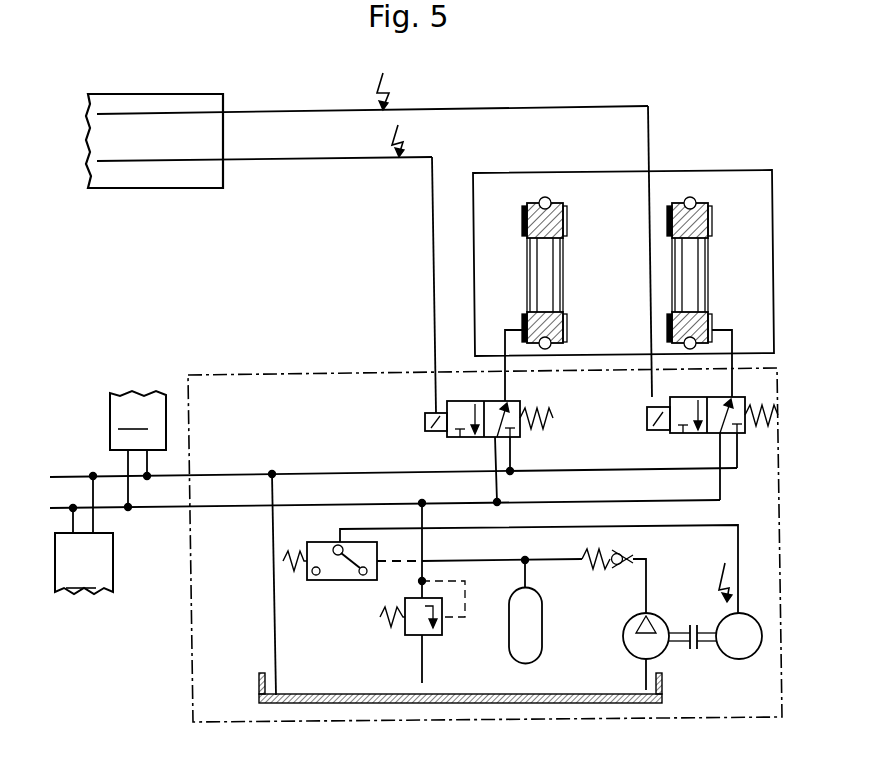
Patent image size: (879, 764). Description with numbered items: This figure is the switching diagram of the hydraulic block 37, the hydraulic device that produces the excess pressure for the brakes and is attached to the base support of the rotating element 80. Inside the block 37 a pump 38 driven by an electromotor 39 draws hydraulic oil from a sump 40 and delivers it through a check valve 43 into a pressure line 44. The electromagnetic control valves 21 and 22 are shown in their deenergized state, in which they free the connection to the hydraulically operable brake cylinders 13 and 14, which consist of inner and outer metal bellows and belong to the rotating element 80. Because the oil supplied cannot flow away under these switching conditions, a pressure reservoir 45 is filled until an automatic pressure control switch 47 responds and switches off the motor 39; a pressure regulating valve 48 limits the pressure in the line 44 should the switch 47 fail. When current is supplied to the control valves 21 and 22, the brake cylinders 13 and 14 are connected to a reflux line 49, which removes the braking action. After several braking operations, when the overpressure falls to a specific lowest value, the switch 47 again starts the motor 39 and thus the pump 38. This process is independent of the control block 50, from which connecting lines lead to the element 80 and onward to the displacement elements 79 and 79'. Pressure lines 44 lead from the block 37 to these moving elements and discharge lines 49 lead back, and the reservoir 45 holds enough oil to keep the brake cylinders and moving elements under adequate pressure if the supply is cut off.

The control block 50 is at (195, 105).
The brake cylinder 13 is at (560, 208).
The brake cylinder 14 is at (704, 207).
The rotating element 80 is at (762, 259).
The hydraulic block 37 is at (778, 535).
The electromagnetic control valve 21 is at (490, 431).
The electromagnetic control valve 22 is at (700, 431).
The reflux line 49 is at (367, 470).
The pressure line 44 is at (359, 504).
The first displacement element 79 is at (84, 535).
The second displacement element 79' is at (138, 449).
The automatic pressure control switch 47 is at (338, 573).
The pressure regulating valve 48 is at (417, 627).
The pressure reservoir 45 is at (513, 645).
The check valve 43 is at (626, 556).
The pump 38 is at (643, 650).
The electromotor 39 is at (747, 656).
The sump 40 is at (258, 693).